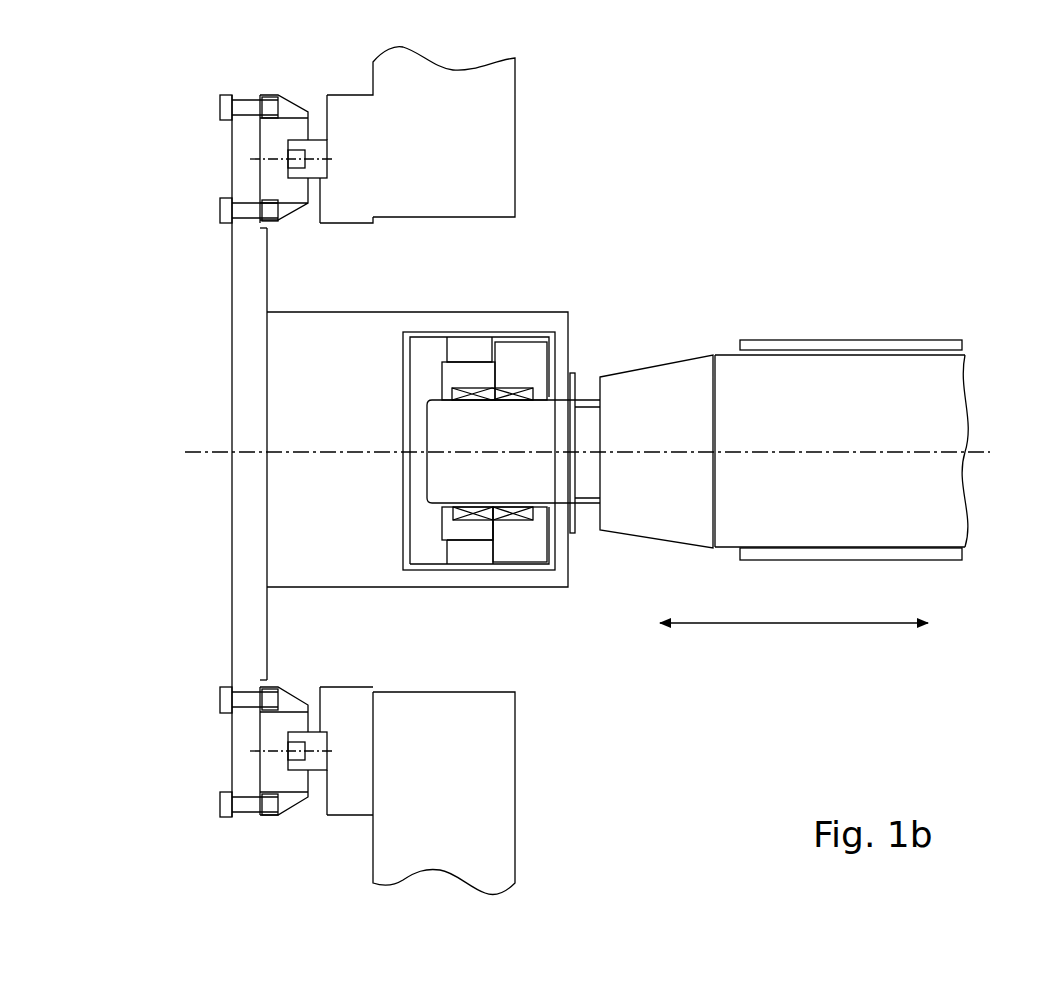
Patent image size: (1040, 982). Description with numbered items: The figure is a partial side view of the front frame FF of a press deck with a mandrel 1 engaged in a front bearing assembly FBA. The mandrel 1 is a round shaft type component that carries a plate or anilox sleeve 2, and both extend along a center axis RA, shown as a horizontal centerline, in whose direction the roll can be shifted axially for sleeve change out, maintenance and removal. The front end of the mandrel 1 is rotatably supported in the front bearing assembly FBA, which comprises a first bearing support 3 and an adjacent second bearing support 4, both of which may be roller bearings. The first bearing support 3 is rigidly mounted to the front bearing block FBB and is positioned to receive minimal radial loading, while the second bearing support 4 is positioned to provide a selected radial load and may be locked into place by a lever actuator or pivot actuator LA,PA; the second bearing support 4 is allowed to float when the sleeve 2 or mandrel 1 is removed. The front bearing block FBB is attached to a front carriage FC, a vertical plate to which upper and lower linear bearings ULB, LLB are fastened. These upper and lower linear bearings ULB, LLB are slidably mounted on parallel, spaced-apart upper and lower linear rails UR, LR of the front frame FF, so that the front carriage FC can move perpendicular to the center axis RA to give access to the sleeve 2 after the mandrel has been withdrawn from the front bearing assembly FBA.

The mandrel 1 is at (438, 442).
The plate or anilox sleeve 2 is at (783, 337).
The first bearing support 3 is at (525, 560).
The second bearing support 4 is at (487, 545).
The front carriage FC is at (280, 273).
The front frame FF is at (520, 140).
The front bearing assembly FBA is at (511, 327).
The front bearing block FBB is at (349, 592).
The lever actuator or pivot actuator LA,PA is at (464, 565).
The center axis RA is at (593, 452).
The upper linear bearing ULB is at (259, 90).
The upper linear rail UR is at (326, 138).
The lower linear bearing LLB is at (252, 825).
The lower linear rail LR is at (324, 756).